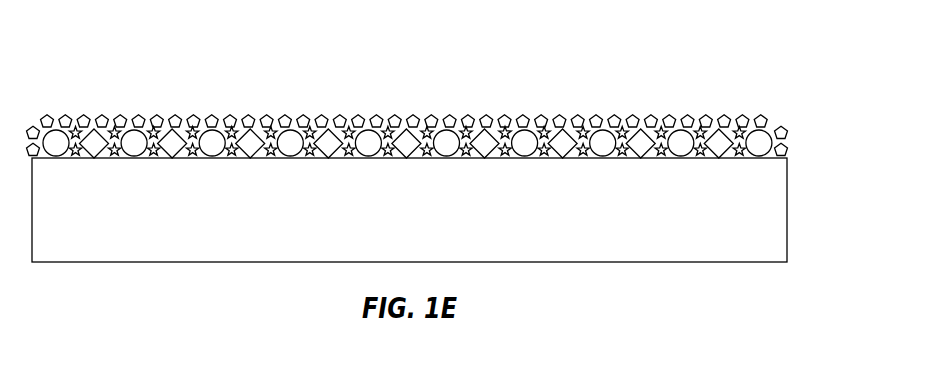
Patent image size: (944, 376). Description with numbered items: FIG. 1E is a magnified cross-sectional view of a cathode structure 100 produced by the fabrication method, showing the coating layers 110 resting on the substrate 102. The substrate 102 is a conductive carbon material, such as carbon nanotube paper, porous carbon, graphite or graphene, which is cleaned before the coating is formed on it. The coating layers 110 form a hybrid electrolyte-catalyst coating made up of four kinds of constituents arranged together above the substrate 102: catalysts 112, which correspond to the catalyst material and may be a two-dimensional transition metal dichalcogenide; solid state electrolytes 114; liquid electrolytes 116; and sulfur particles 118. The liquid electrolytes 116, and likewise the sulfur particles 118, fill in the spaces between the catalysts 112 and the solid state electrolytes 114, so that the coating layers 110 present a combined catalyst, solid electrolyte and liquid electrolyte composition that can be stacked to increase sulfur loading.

The device / article 100 is at (136, 57).
The substrate 102 is at (788, 227).
The coating layers 110 is at (808, 123).
The catalysts 112 is at (768, 128).
The solid state electrolytes 114 is at (563, 130).
The liquid electrolytes 116 is at (448, 115).
The sulfur particles 118 is at (237, 132).